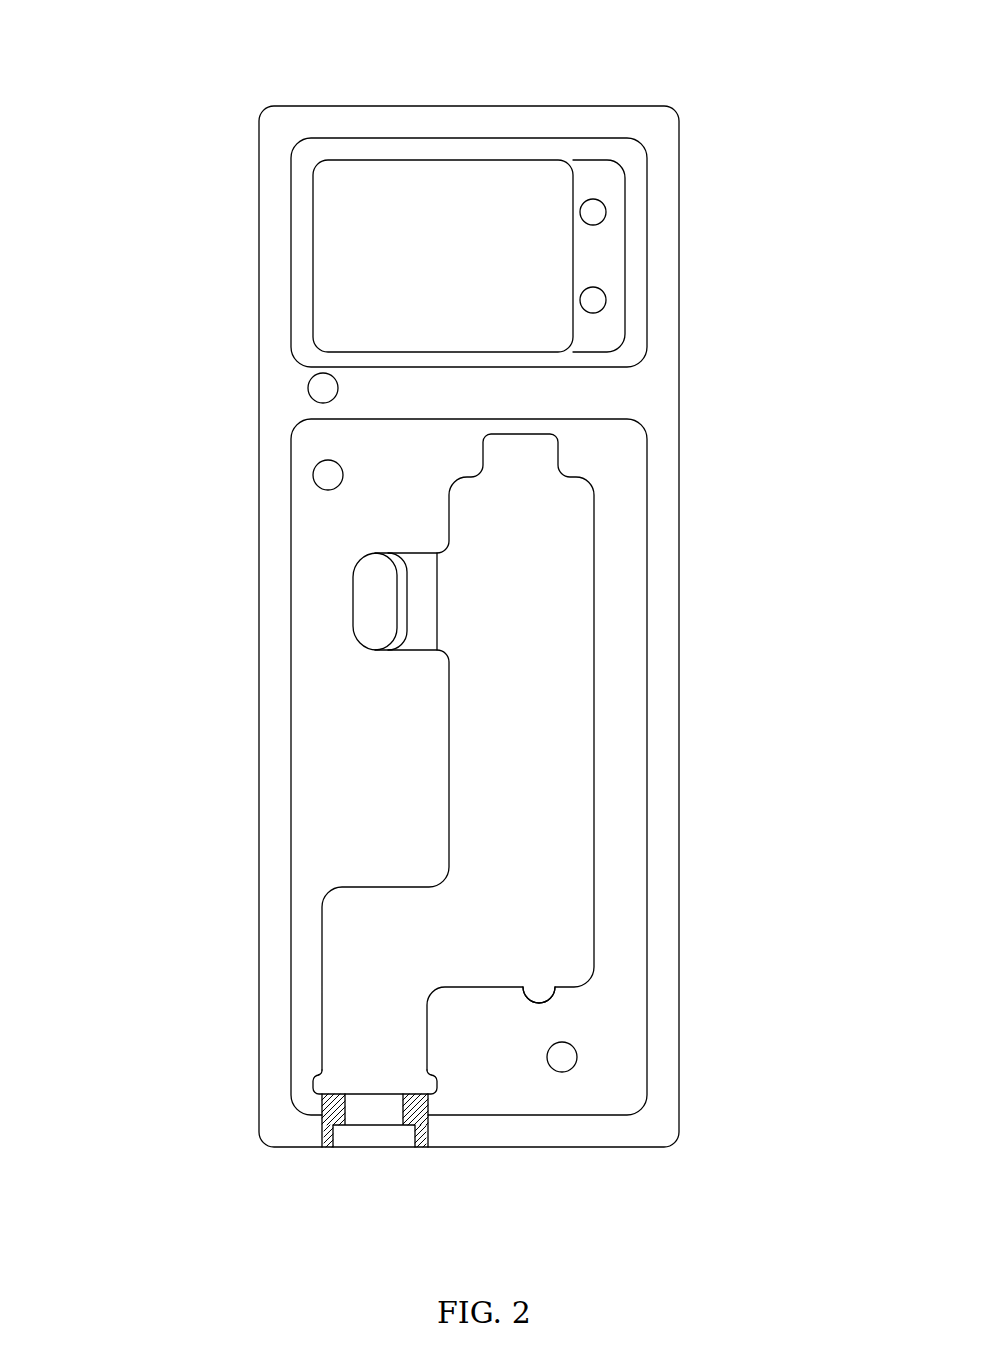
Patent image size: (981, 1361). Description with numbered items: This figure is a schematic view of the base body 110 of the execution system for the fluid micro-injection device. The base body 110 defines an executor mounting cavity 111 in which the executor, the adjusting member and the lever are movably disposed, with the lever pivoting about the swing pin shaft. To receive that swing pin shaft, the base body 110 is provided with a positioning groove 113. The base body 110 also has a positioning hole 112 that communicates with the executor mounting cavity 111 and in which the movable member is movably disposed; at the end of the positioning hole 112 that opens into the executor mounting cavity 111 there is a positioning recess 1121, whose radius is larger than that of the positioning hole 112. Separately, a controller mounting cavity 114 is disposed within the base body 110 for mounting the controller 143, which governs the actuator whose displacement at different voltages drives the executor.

The base body 110 is at (650, 402).
The executor mounting cavity 111 is at (537, 840).
The positioning hole 112 is at (378, 1117).
The positioning recess 1121 is at (317, 1080).
The positioning groove 113 is at (541, 989).
The controller mounting cavity 114 is at (587, 173).
The controller 143 is at (373, 212).